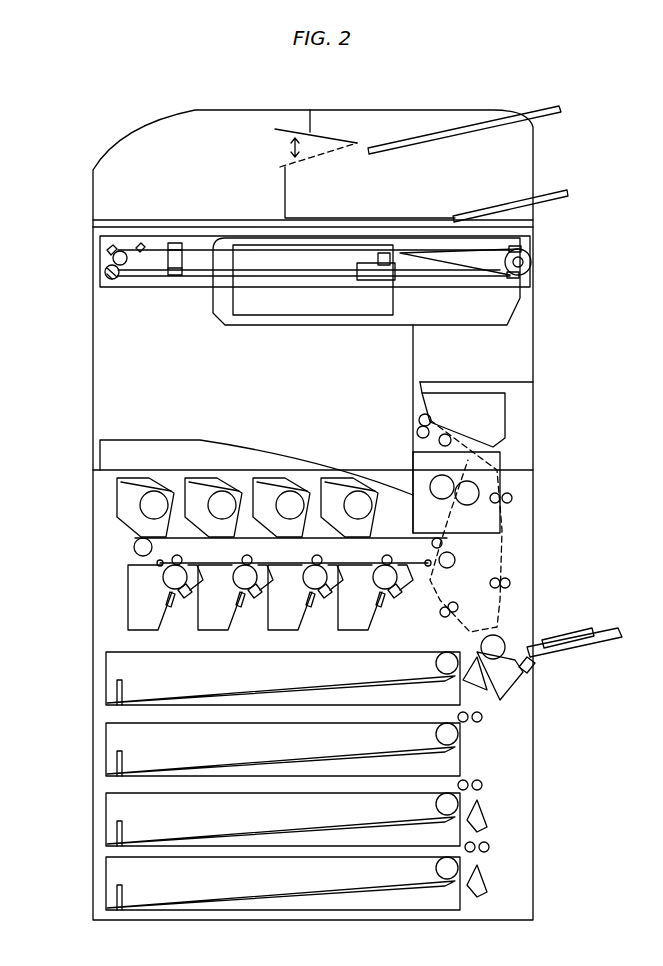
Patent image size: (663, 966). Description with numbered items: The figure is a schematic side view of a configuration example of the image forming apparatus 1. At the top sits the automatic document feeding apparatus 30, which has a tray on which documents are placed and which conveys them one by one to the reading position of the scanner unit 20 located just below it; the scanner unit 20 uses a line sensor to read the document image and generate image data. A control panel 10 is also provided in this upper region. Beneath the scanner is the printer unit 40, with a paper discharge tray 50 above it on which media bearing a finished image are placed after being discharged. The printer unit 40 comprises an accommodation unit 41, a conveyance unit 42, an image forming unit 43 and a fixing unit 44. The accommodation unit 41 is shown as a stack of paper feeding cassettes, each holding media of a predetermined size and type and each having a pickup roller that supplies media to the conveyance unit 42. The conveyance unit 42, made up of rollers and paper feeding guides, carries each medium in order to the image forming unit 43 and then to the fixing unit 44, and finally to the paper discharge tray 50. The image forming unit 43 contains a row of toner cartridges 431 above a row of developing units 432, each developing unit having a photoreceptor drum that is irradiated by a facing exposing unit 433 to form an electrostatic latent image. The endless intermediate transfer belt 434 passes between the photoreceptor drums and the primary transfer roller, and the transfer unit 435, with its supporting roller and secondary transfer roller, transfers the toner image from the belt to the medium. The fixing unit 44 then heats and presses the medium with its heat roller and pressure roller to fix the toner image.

The image forming apparatus 1 is at (220, 110).
The automatic document feeding apparatus 30 is at (340, 120).
The scanner unit 20 is at (533, 228).
The control panel 10 is at (520, 297).
The paper discharge tray 50 is at (252, 445).
The image forming unit 43 is at (108, 500).
The toner cartridges 431 is at (130, 490).
The intermediate transfer belt 434 is at (150, 561).
The exposing units 433 is at (143, 628).
The transfer unit 435 is at (453, 553).
The printer unit 40 is at (120, 599).
The developing units 432 is at (176, 606).
The fixing unit 44 is at (505, 460).
The conveyance unit 42 is at (492, 610).
The accommodation unit 41 is at (457, 870).